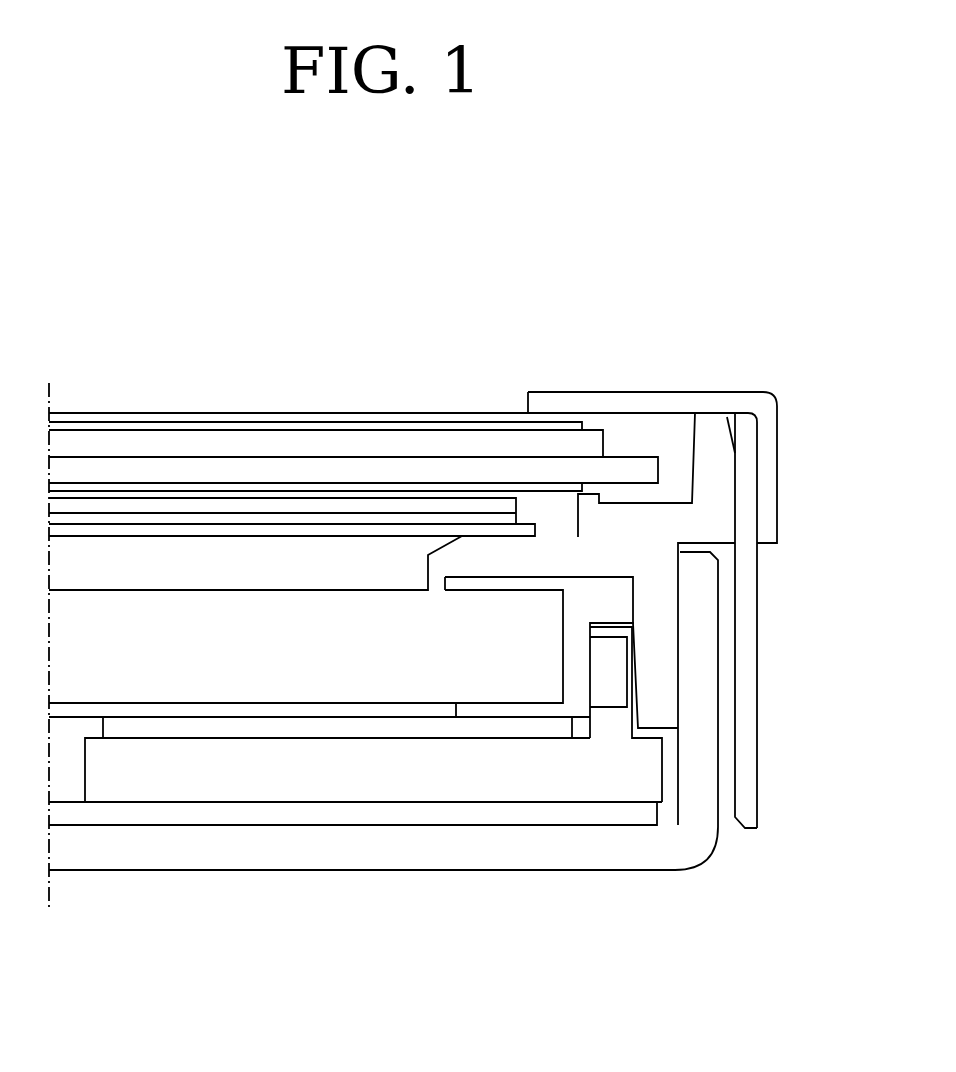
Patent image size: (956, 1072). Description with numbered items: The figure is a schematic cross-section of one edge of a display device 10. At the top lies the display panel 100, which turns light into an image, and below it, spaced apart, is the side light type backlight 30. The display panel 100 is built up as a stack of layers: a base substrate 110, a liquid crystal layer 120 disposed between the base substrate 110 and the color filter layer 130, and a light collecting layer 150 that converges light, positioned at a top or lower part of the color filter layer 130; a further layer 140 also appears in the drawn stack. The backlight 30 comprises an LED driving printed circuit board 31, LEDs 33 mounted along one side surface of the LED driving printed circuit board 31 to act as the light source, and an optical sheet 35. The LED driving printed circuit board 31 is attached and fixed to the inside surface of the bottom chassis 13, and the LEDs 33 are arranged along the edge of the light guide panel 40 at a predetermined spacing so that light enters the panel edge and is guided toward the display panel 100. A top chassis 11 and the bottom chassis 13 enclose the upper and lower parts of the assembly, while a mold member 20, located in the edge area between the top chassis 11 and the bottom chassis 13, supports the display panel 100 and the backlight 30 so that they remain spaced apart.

The display device 10 is at (366, 207).
The top chassis 11 is at (648, 392).
The bottom chassis 13 is at (658, 855).
The mold member 20 is at (714, 499).
The backlight 30 is at (363, 825).
The LED driving printed circuit board 31 is at (270, 786).
The LED 33 is at (613, 693).
The optical sheet 35 is at (326, 733).
The light guide panel 40 is at (204, 676).
The display panel 100 is at (353, 419).
The base substrate 110 is at (160, 487).
The liquid crystal layer 120 is at (210, 470).
The color filter layer 130 is at (308, 422).
The second polarizer 140 is at (355, 413).
The light collecting layer 150 is at (257, 430).